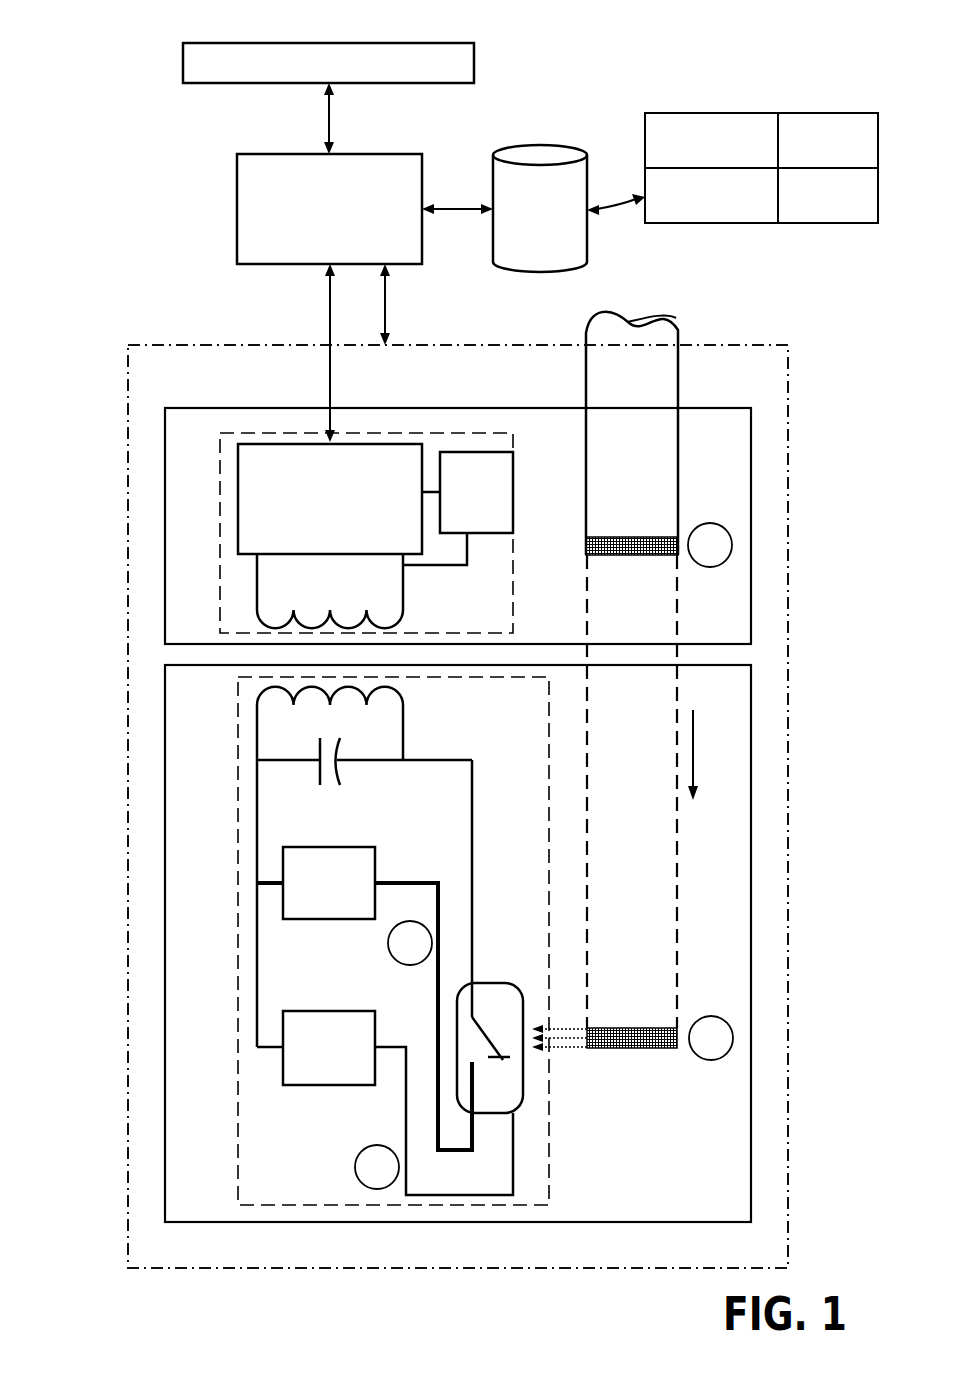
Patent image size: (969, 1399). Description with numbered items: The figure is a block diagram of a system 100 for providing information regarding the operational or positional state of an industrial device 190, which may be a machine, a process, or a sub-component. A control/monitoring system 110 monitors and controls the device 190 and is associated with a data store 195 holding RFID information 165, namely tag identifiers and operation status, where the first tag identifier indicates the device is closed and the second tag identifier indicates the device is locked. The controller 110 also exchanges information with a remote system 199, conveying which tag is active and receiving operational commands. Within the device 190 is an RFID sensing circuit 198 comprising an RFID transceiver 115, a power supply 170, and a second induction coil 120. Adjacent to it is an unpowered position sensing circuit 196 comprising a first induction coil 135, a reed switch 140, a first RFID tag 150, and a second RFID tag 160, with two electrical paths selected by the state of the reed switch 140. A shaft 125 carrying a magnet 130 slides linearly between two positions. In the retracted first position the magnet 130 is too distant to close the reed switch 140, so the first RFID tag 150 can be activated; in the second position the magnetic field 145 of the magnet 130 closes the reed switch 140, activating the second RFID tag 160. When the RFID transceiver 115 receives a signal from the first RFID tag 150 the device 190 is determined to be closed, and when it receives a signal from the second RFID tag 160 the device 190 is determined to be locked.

The system 100 is at (148, 22).
The remote system 199 is at (328, 63).
The control/monitoring system 110 is at (329, 209).
The data store 195 is at (540, 208).
The RFID information 165 is at (805, 225).
The industrial device 190 is at (458, 806).
The RFID sensing circuit 198 is at (270, 433).
The RFID transceiver 115 is at (330, 499).
The power supply 170 is at (458, 508).
The second induction coil 120 is at (257, 590).
The shaft 125 is at (586, 447).
The magnet 130 is at (586, 545).
The position sensing circuit 196 is at (310, 1205).
The first induction coil 135 is at (257, 720).
The second RFID tag 160 is at (364, 998).
The first RFID tag 150 is at (385, 1103).
The reed switch 140 is at (526, 977).
The magnetic field 145 is at (572, 1050).